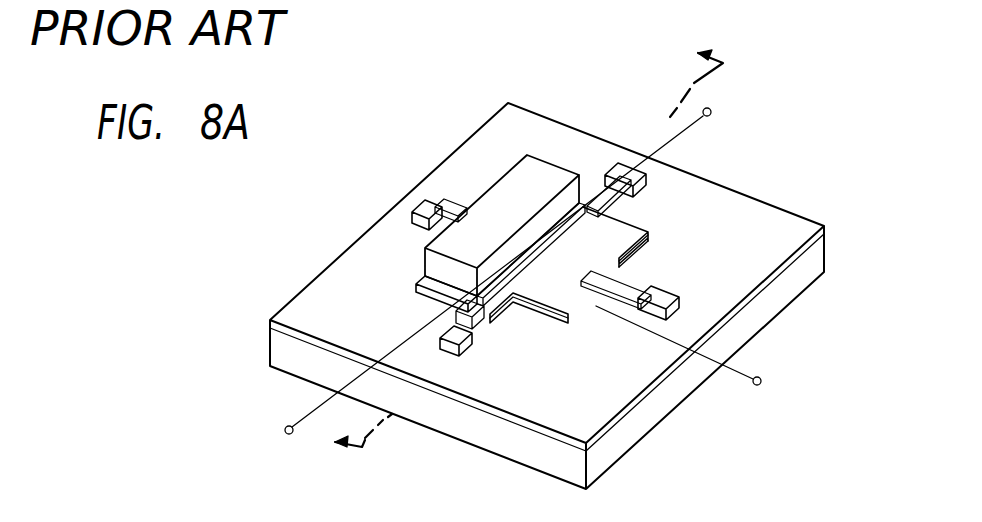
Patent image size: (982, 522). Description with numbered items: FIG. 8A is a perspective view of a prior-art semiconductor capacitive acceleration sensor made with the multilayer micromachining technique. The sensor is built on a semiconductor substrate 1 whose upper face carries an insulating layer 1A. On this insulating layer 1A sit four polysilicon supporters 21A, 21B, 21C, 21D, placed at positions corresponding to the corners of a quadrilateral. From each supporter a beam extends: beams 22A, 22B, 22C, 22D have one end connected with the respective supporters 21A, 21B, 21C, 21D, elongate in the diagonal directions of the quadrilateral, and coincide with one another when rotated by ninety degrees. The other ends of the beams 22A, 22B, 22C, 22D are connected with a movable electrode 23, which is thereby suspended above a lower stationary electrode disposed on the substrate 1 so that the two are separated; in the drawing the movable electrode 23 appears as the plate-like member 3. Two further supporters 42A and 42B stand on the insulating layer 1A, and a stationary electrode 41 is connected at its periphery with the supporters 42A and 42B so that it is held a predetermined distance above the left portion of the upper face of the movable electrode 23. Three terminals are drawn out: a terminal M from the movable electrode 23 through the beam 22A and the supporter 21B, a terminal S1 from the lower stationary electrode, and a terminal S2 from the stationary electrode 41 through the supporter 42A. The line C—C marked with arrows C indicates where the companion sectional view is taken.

The semiconductor substrate 1 is at (815, 267).
The insulating layer 1A is at (823, 235).
The plate member 3 is at (545, 326).
The movable electrode 23 is at (569, 320).
The stationary electrode 41 is at (443, 247).
The supporter 42A is at (433, 264).
The supporter 42B is at (547, 157).
The supporter 21A is at (662, 290).
The supporter 21B is at (613, 172).
The supporter 21C is at (440, 202).
The supporter 21D is at (468, 349).
The beam 22A is at (653, 288).
The beam 22B is at (598, 190).
The beam 22C is at (460, 197).
The beam 22D is at (492, 302).
The terminal M is at (513, 255).
The terminal S1 is at (695, 356).
The terminal S2 is at (272, 444).
The line C— C is at (527, 254).